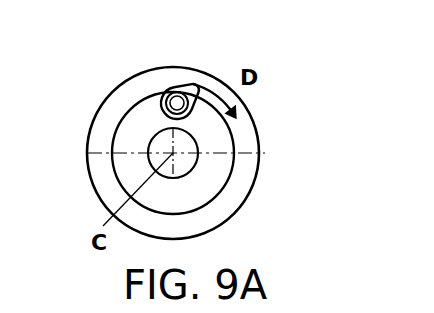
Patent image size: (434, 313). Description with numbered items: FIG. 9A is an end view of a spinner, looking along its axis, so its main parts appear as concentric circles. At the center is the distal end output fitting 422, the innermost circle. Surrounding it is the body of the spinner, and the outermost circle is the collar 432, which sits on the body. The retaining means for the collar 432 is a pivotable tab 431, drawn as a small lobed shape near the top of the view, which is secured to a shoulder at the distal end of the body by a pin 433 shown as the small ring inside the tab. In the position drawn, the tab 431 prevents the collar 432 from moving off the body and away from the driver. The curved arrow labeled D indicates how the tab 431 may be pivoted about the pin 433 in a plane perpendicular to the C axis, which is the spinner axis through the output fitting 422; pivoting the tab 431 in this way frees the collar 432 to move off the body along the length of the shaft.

The distal end output fitting 422 is at (192, 173).
The pivotable tab 431 is at (182, 86).
The collar 432 is at (256, 131).
The pin 433 is at (144, 84).